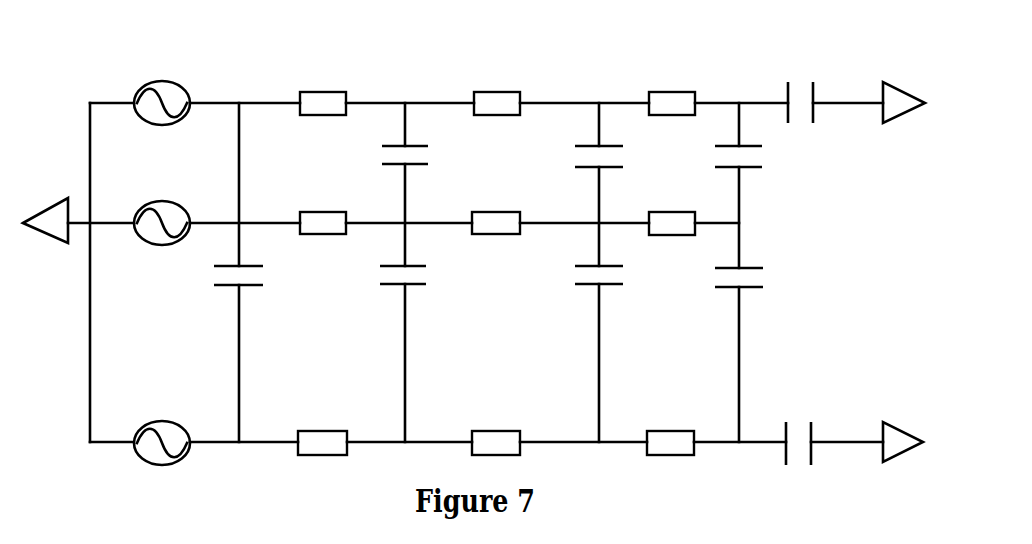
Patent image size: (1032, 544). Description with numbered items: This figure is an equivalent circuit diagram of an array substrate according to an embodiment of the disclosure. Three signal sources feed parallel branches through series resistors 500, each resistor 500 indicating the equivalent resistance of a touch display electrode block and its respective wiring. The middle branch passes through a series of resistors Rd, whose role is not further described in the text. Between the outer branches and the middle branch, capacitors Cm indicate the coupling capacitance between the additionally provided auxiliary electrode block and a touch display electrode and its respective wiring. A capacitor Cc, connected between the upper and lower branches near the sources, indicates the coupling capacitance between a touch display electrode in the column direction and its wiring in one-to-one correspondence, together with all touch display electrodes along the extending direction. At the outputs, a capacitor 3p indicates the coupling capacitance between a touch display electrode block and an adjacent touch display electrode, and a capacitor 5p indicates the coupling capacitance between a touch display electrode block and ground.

The resistor 500 is at (496, 274).
The damping resistor Rd is at (497, 225).
The capacitor Cm is at (559, 240).
The capacitor Cc is at (224, 290).
The capacitor 3p is at (800, 88).
The capacitor 5p is at (806, 429).